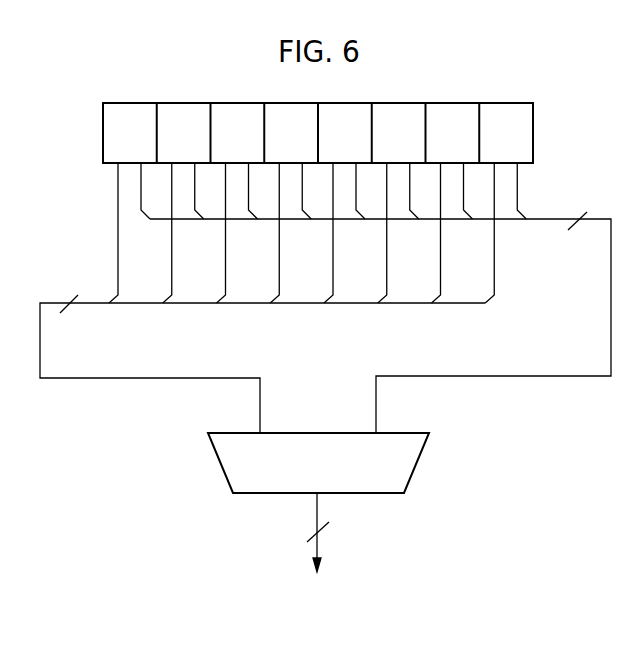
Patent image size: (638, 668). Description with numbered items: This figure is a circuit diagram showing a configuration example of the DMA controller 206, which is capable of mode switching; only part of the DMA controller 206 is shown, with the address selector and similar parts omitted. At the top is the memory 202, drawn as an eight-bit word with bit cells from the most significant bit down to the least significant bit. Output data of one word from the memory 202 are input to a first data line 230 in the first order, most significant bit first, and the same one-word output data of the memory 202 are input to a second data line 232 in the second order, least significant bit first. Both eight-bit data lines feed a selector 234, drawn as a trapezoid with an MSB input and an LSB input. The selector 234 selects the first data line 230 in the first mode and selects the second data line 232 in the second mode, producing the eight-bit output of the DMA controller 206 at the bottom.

The memory 202 is at (103, 126).
The first data line 230 is at (88, 379).
The second data line 232 is at (545, 377).
The selector 234 is at (220, 467).
The DMA controller 206 is at (294, 632).